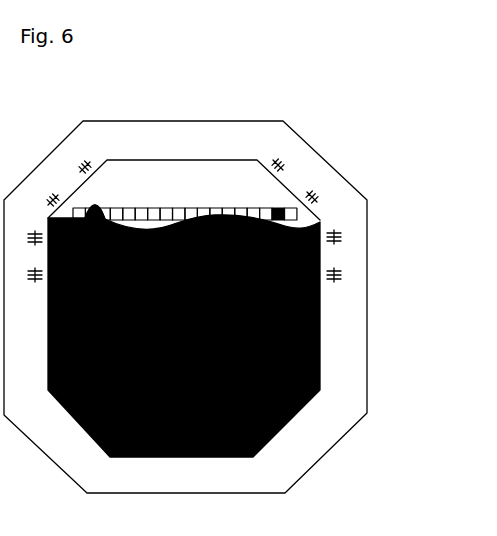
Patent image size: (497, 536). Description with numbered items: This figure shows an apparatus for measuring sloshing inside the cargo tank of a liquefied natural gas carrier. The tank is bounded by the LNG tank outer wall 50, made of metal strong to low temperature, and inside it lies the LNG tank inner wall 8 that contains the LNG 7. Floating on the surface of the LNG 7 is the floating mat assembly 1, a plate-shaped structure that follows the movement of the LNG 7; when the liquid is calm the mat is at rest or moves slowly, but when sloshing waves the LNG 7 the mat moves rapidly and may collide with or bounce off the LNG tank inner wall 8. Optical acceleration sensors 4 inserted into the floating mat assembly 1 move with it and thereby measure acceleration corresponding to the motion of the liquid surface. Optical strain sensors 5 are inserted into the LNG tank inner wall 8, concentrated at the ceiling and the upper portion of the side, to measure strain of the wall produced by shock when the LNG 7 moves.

The floating mat assembly 1 is at (152, 208).
The optical acceleration sensor 4 is at (95, 207).
The optical strain sensor 5 is at (325, 201).
The LNG 7 is at (320, 337).
The LNG tank inner wall 8 is at (287, 183).
The LNG tank outer wall 50 is at (368, 232).